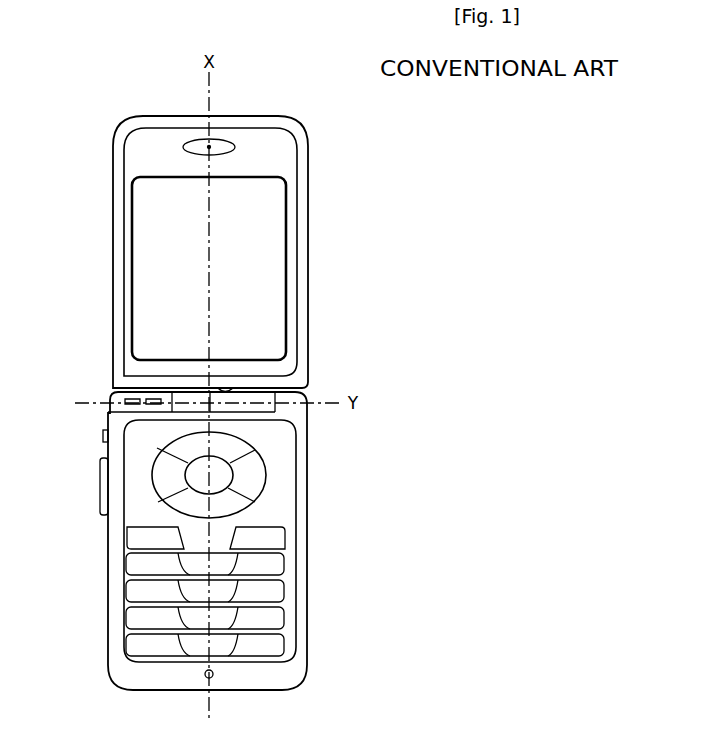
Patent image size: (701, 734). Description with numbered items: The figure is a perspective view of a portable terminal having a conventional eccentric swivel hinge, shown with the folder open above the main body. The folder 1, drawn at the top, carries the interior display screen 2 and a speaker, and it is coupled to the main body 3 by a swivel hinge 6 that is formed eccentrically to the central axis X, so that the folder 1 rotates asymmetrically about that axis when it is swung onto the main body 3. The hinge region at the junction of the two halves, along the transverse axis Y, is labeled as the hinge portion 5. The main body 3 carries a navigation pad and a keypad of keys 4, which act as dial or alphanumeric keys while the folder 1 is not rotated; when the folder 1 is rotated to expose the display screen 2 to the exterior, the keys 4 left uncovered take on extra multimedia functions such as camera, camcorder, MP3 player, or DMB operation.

The folder 1 is at (308, 157).
The display screen 2 is at (278, 236).
The main body 3 is at (305, 507).
The keys 4 is at (280, 563).
The hinge 5 is at (272, 410).
The swivel hinge 6 is at (235, 391).